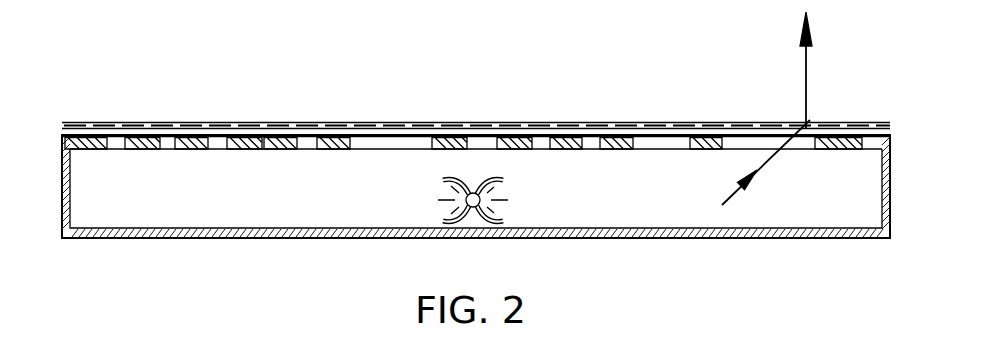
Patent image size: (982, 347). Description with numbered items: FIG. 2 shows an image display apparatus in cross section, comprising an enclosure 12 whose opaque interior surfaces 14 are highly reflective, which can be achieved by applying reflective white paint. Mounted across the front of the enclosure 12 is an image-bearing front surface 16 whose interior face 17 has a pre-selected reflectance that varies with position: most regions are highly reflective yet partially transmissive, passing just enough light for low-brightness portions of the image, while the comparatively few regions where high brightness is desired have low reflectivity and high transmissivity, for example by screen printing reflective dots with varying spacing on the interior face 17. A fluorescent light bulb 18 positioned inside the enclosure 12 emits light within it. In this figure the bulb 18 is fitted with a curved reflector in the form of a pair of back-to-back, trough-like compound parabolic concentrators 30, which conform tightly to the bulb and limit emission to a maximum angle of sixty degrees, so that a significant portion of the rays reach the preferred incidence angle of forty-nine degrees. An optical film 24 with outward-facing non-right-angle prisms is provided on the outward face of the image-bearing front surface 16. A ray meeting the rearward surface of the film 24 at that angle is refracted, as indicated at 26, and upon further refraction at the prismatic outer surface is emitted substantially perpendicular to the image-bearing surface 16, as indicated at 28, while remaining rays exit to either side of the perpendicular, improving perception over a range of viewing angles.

The enclosure 12 is at (735, 239).
The interior surfaces 14 is at (71, 182).
The image-bearing front surface 16 is at (709, 137).
The interior face 17 is at (243, 150).
The fluorescent light bulb 18 is at (483, 199).
The optical film 24 is at (260, 123).
The refracted light ray 26 is at (812, 120).
The emitted light ray 28 is at (810, 68).
The compound parabolic concentrators 30 is at (440, 178).